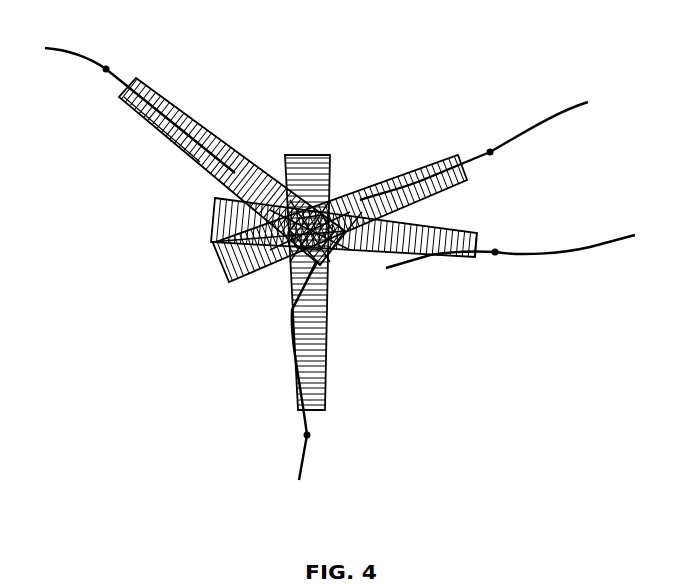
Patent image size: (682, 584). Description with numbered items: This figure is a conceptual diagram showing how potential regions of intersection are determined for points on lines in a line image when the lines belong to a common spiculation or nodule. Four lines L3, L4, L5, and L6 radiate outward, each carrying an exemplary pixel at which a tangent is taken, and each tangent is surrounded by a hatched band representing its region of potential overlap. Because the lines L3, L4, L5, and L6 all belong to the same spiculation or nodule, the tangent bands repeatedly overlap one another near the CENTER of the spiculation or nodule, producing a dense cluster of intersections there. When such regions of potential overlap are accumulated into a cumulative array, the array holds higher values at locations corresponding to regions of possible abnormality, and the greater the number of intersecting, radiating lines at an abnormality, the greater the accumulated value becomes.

The line L3 is at (58, 50).
The line L4 is at (567, 105).
The line L5 is at (610, 240).
The line L6 is at (300, 463).
The center of the spiculation or nodule CENTER is at (338, 187).